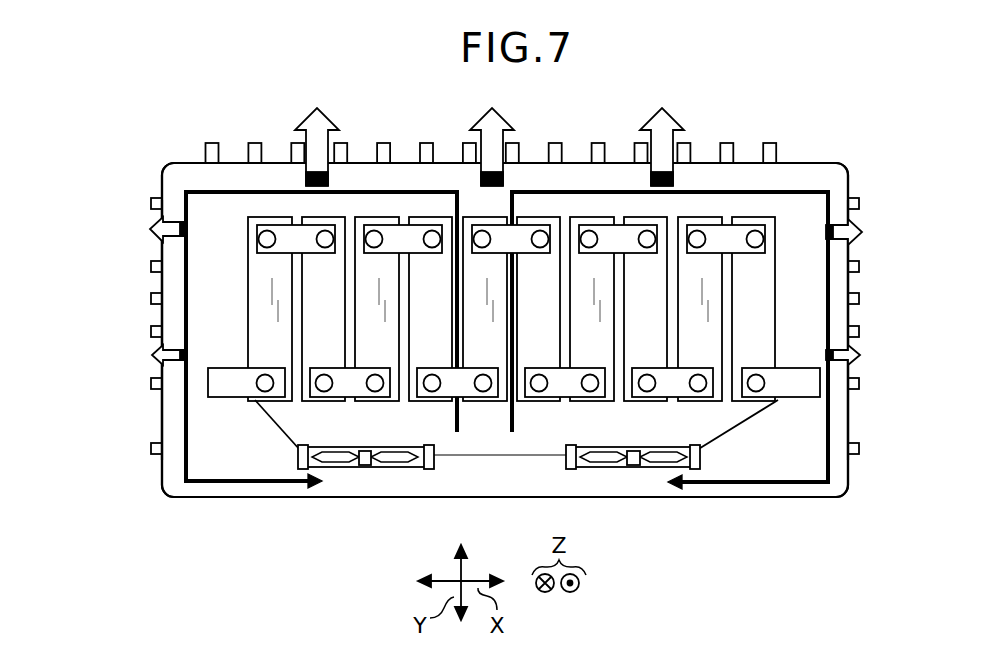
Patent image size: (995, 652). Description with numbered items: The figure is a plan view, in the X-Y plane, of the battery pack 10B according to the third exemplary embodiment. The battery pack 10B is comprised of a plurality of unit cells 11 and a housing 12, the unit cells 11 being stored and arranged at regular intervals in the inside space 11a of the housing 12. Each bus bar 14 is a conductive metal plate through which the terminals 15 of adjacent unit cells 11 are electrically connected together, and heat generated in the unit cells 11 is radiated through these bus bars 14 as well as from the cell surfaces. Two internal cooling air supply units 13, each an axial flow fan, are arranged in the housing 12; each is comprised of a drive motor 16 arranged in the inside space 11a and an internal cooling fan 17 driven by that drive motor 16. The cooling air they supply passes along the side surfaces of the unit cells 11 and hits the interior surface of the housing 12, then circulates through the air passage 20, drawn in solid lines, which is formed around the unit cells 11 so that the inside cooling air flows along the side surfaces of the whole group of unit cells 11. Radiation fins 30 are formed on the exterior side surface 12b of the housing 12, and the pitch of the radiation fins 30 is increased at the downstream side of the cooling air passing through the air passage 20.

The battery pack 10B is at (826, 152).
The unit cells 11 is at (765, 287).
The inside space 11a is at (800, 413).
The housing 12 is at (788, 498).
The exterior side surface 12b is at (163, 187).
The internal cooling air supply units 13 is at (361, 480).
The bus bars 14 is at (283, 232).
The terminals 15 is at (264, 230).
The drive motor 16 is at (633, 467).
The internal cooling fan 17 is at (660, 463).
The air passage 20 is at (194, 190).
The radiation fins 30 is at (726, 138).